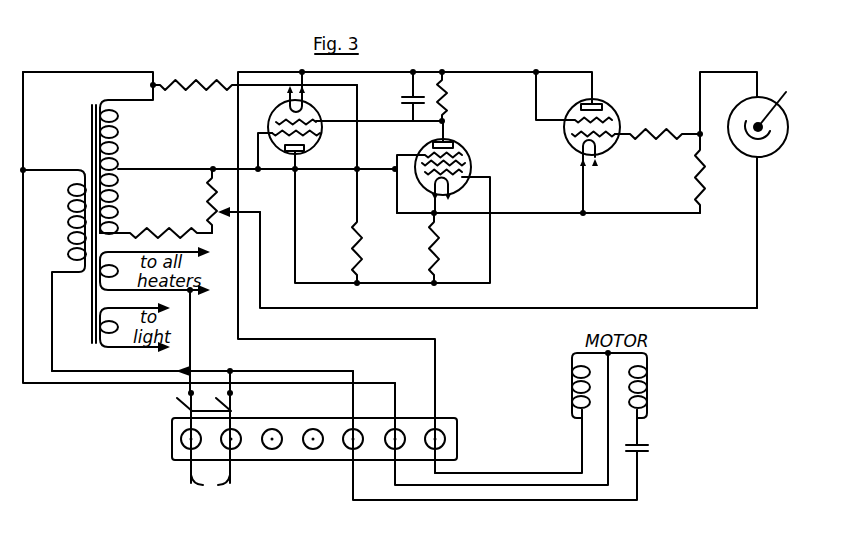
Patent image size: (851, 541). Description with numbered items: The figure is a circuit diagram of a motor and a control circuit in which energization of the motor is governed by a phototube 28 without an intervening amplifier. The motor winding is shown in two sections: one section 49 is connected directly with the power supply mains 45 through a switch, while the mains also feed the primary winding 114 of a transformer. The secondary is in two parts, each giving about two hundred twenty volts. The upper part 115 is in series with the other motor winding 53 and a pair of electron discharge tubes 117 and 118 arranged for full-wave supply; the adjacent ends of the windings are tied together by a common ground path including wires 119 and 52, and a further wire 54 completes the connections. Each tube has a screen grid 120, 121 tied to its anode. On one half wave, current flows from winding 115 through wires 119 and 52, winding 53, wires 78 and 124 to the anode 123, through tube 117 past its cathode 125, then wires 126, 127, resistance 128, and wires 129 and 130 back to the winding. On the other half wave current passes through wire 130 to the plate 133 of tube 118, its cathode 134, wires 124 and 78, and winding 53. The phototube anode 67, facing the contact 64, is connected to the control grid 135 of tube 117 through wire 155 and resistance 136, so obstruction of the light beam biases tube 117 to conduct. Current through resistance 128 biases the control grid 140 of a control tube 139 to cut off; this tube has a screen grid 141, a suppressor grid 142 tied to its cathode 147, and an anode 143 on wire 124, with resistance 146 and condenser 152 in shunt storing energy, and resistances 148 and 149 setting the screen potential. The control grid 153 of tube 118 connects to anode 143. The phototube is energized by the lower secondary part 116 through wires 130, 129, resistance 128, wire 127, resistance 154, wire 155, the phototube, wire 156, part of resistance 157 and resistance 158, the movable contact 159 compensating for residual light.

The phototube 28 is at (773, 154).
The power supply mains 45 is at (205, 448).
The motor winding section 49 is at (648, 390).
The wire 52 is at (578, 511).
The motor winding 53 is at (572, 389).
The conductor 54 is at (494, 501).
The relay contact 64 is at (750, 138).
The anode 67 is at (779, 106).
The wire 78 is at (515, 473).
The primary winding 114 is at (68, 216).
The secondary winding part 115 is at (120, 134).
The secondary winding part 116 is at (120, 198).
The first electron discharge tube 117 is at (612, 105).
The second electron discharge tube 118 is at (311, 136).
The wire 119 is at (93, 72).
The screen grid 120 is at (578, 120).
The screen grid 121 is at (306, 148).
The anode 123 is at (601, 104).
The wire 124 is at (242, 72).
The cathode 125 is at (575, 148).
The wire 126 is at (586, 192).
The wire 127 is at (527, 215).
The resistance 128 is at (437, 258).
The wire 129 is at (405, 285).
The wire 130 is at (190, 168).
The plate 133 is at (298, 153).
The cathode 134 is at (306, 108).
The control grid 135 is at (608, 134).
The resistance 136 is at (663, 131).
The control tube 139 is at (464, 150).
The control grid 140 is at (457, 178).
The screen grid 141 is at (455, 166).
The suppressor grid 142 is at (423, 149).
The anode 143 is at (448, 142).
The resistance 146 is at (447, 89).
The cathode 147 is at (422, 185).
The resistance 148 is at (180, 78).
The resistance 149 is at (374, 226).
The condenser 152 is at (408, 99).
The control grid 153 is at (280, 100).
The resistance 154 is at (706, 197).
The wire 155 is at (727, 72).
The wire 156 is at (758, 233).
The resistance 157 is at (209, 186).
The resistance 158 is at (156, 222).
The movable contact 159 is at (230, 219).